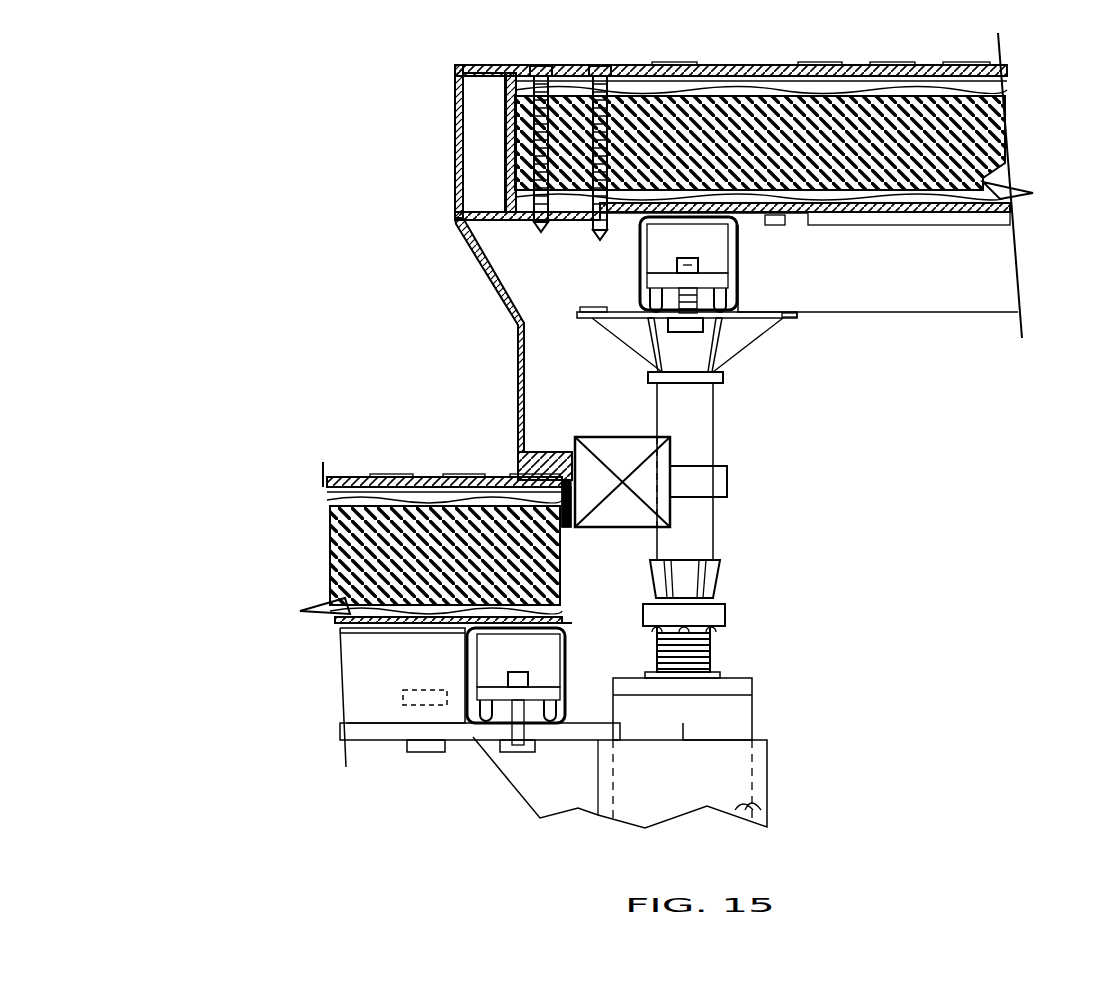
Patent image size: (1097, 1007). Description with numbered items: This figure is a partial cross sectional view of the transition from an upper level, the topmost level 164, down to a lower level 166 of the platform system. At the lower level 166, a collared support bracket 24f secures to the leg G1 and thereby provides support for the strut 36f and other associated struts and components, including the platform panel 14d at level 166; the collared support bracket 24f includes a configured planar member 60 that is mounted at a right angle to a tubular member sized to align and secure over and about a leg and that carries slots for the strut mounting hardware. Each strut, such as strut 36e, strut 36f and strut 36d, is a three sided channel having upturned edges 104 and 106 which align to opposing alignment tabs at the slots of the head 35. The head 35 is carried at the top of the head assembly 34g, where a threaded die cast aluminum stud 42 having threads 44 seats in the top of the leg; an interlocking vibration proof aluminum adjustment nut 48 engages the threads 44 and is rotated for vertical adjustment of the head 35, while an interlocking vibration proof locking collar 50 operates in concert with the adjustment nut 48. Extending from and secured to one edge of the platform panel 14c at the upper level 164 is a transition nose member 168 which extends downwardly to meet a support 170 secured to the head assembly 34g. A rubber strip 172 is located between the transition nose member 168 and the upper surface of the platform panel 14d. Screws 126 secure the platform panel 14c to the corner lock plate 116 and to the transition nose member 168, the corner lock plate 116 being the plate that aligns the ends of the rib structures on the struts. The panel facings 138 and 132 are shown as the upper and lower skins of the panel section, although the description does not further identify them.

The screws 126 is at (600, 126).
The platform panel 14c is at (744, 125).
The platform panel 14d is at (435, 526).
The top facing sheet 138 is at (769, 68).
The bottom facing sheet 132 is at (843, 212).
The topmost level 164 is at (425, 135).
The lower level 166 is at (302, 548).
The transition nose member 168 is at (457, 335).
The rubber strip 172 is at (518, 463).
The corner lock plate 116 is at (629, 266).
The strut 36e is at (648, 264).
The strut 36f is at (547, 675).
The strut 36d is at (878, 289).
The upturned edge 106 is at (742, 325).
The upturned edge 104 is at (487, 782).
The head 35 is at (696, 350).
The head assembly 34g is at (738, 426).
The support 170 is at (720, 480).
The interlocking vibration proof locking collar 50 is at (717, 570).
The interlocking vibration proof aluminum adjustment nut 48 is at (718, 620).
The threads 44 is at (708, 652).
The threaded die cast aluminum stud 42 is at (732, 661).
The leg G1 is at (747, 718).
The configured planar member 60 is at (468, 735).
The collared support bracket 24f is at (609, 785).